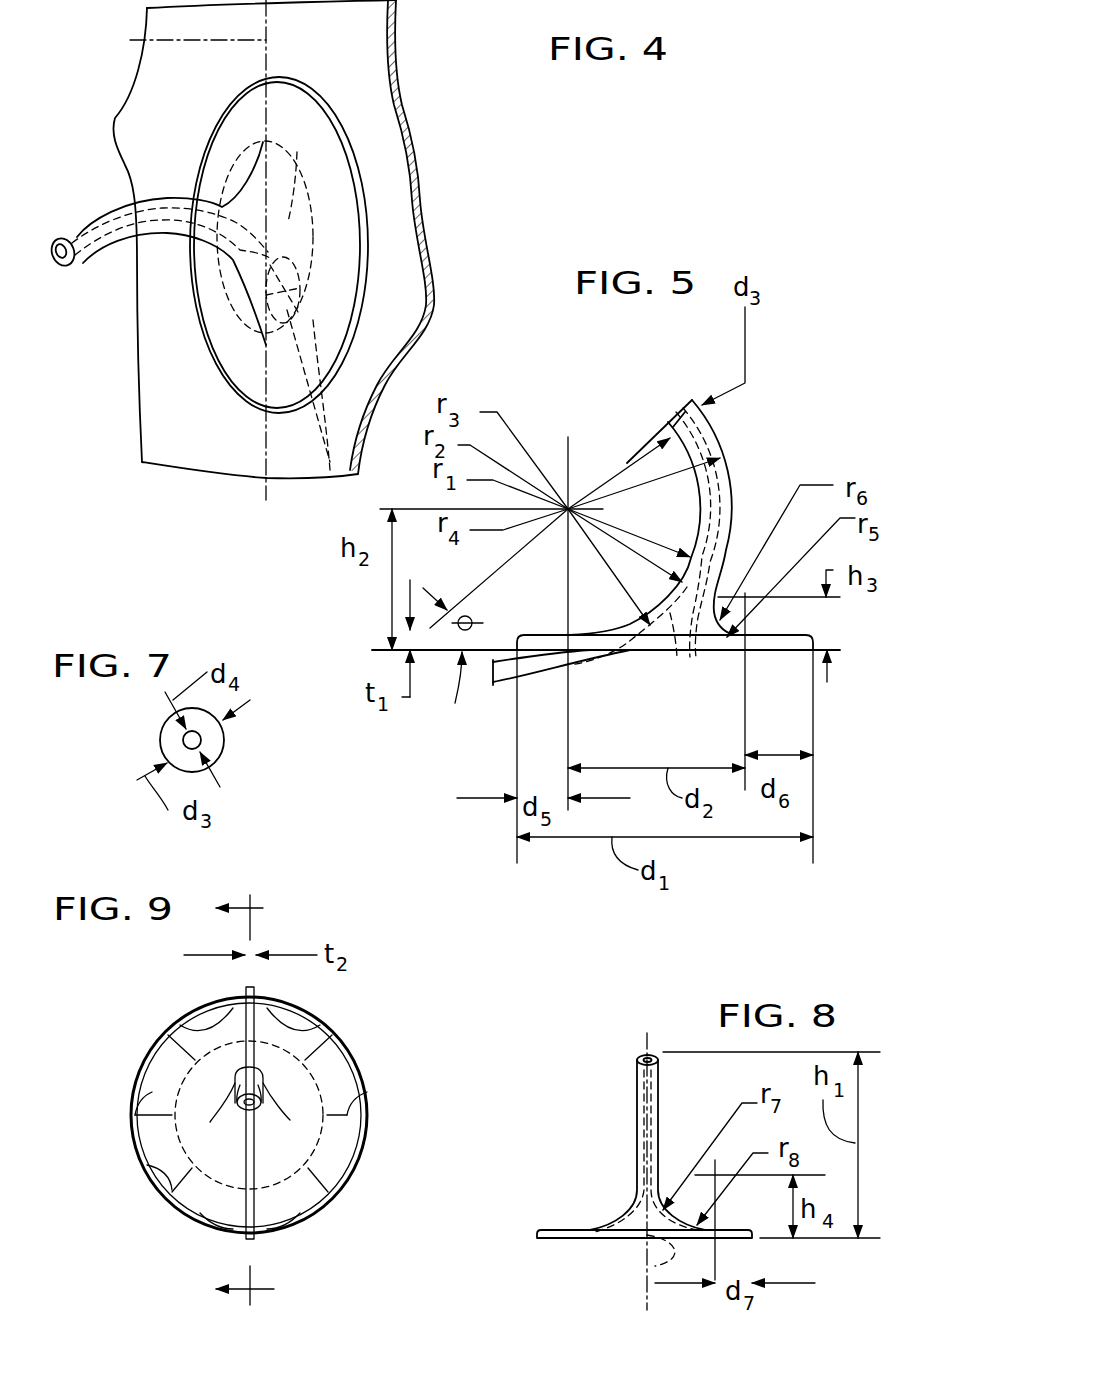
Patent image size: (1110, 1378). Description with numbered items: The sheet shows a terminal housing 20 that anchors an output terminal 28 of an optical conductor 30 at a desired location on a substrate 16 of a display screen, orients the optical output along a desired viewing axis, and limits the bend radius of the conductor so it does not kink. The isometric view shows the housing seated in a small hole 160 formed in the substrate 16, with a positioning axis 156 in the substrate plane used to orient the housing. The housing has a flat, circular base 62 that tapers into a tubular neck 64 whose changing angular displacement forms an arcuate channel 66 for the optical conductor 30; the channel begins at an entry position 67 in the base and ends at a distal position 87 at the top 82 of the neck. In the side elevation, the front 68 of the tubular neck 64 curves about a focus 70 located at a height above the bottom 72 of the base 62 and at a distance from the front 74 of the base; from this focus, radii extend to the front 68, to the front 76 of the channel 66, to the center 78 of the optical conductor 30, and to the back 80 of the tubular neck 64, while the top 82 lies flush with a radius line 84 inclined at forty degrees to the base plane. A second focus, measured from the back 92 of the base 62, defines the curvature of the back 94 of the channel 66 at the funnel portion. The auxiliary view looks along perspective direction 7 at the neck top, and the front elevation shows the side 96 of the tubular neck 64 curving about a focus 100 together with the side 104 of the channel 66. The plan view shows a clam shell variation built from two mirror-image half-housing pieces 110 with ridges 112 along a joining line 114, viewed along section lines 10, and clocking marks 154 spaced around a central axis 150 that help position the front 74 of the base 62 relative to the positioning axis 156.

In FIG. 5, the perspective direction 7— 7 is at (710, 370).
In FIG. 9, the section lines 10— 10 is at (253, 1105).
In FIG. 4, the substrate 16 is at (404, 303).
In FIG. 4, the terminal housing 20 is at (430, 73).
In FIG. 5, the terminal housing 20 is at (725, 423).
In FIG. 9, the terminal housing 20 is at (371, 1059).
In FIG. 8, the terminal housing 20 is at (600, 1147).
In FIG. 4, the output terminal 28 is at (57, 267).
In FIG. 4, the optical conductor 30 is at (317, 455).
In FIG. 5, the optical conductor 30 is at (583, 660).
In FIG. 4, the base 62 is at (303, 121).
In FIG. 5, the base 62 is at (772, 628).
In FIG. 4, the tubular neck 64 is at (110, 210).
In FIG. 5, the tubular neck 64 is at (728, 458).
In FIG. 4, the channel 66 is at (180, 200).
In FIG. 5, the channel 66 is at (730, 462).
In FIG. 5, the entry position 67 is at (693, 645).
In FIG. 4, the front of tubular neck 68 is at (170, 253).
In FIG. 5, the front of tubular neck 68 is at (693, 473).
In FIG. 5, the focus 70 is at (566, 505).
In FIG. 4, the bottom of base 72 is at (367, 198).
In FIG. 5, the bottom of base 72 is at (552, 668).
In FIG. 8, the bottom of base 72 is at (570, 1240).
In FIG. 4, the front of base 74 is at (228, 380).
In FIG. 5, the front of base 74 is at (505, 640).
In FIG. 5, the front of channel 76 is at (673, 663).
In FIG. 5, the center of optical conductor 78 is at (667, 643).
In FIG. 5, the back of tubular neck 80 is at (728, 440).
In FIG. 5, the top of tubular neck 82 is at (680, 405).
In FIG. 7, the top of tubular neck 82 is at (226, 740).
In FIG. 5, the radius line 84 is at (482, 587).
In FIG. 5, the distal position of channel 87 is at (667, 420).
In FIG. 5, the back of base 92 is at (665, 430).
In FIG. 5, the back of channel 94 is at (713, 647).
In FIG. 8, the side of tubular neck 96 is at (667, 1202).
In FIG. 8, the focus 100 is at (697, 1228).
In FIG. 8, the side of channel 104 is at (655, 1265).
In FIG. 9, the half-housing piece 110 is at (198, 1007).
In FIG. 9, the ridge 112 is at (195, 1028).
In FIG. 9, the joining line 114 is at (250, 1240).
In FIG. 9, the central axis 150 is at (252, 1118).
In FIG. 8, the central axis 150 is at (647, 1303).
In FIG. 9, the clocking marks 154 is at (180, 1057).
In FIG. 4, the positioning axis 156 is at (172, 250).
In FIG. 4, the small hole 160 is at (280, 248).